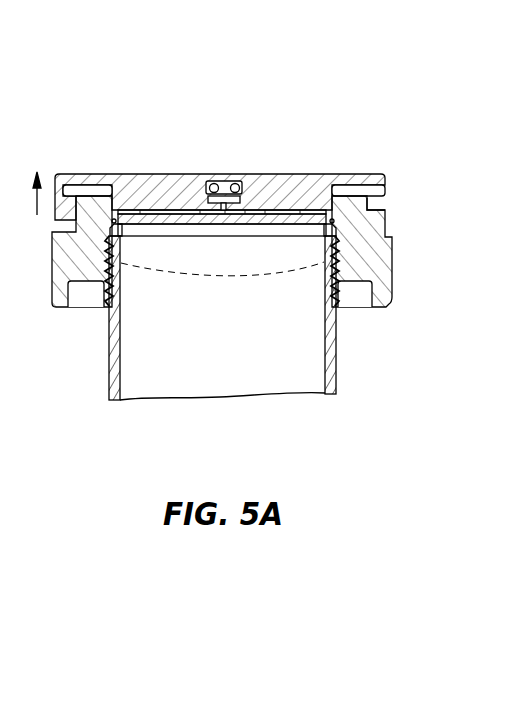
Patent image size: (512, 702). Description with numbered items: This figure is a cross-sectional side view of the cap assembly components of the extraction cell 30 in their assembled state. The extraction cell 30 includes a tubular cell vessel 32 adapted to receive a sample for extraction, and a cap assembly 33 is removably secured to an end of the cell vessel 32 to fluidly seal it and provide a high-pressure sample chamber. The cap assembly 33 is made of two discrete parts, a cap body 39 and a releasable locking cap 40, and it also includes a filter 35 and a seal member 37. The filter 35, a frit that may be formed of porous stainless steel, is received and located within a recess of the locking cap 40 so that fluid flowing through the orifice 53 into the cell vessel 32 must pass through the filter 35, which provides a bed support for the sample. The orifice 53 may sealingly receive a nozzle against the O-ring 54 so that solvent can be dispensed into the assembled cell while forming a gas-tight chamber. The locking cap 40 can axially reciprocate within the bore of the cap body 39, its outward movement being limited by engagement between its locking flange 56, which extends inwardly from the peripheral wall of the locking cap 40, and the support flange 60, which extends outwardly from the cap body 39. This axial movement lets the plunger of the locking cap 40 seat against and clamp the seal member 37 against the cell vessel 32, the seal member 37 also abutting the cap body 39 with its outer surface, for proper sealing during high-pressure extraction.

The extraction cell 30 is at (261, 225).
The cell vessel 32 is at (330, 382).
The cap assembly 33 is at (261, 210).
The filter 35 is at (220, 222).
The seal member 37 is at (119, 230).
The cap body 39 is at (403, 292).
The locking cap 40 is at (362, 162).
The orifice 53 is at (237, 182).
The O-ring 54 is at (215, 183).
The locking flange 56 is at (378, 213).
The support flange 60 is at (375, 195).